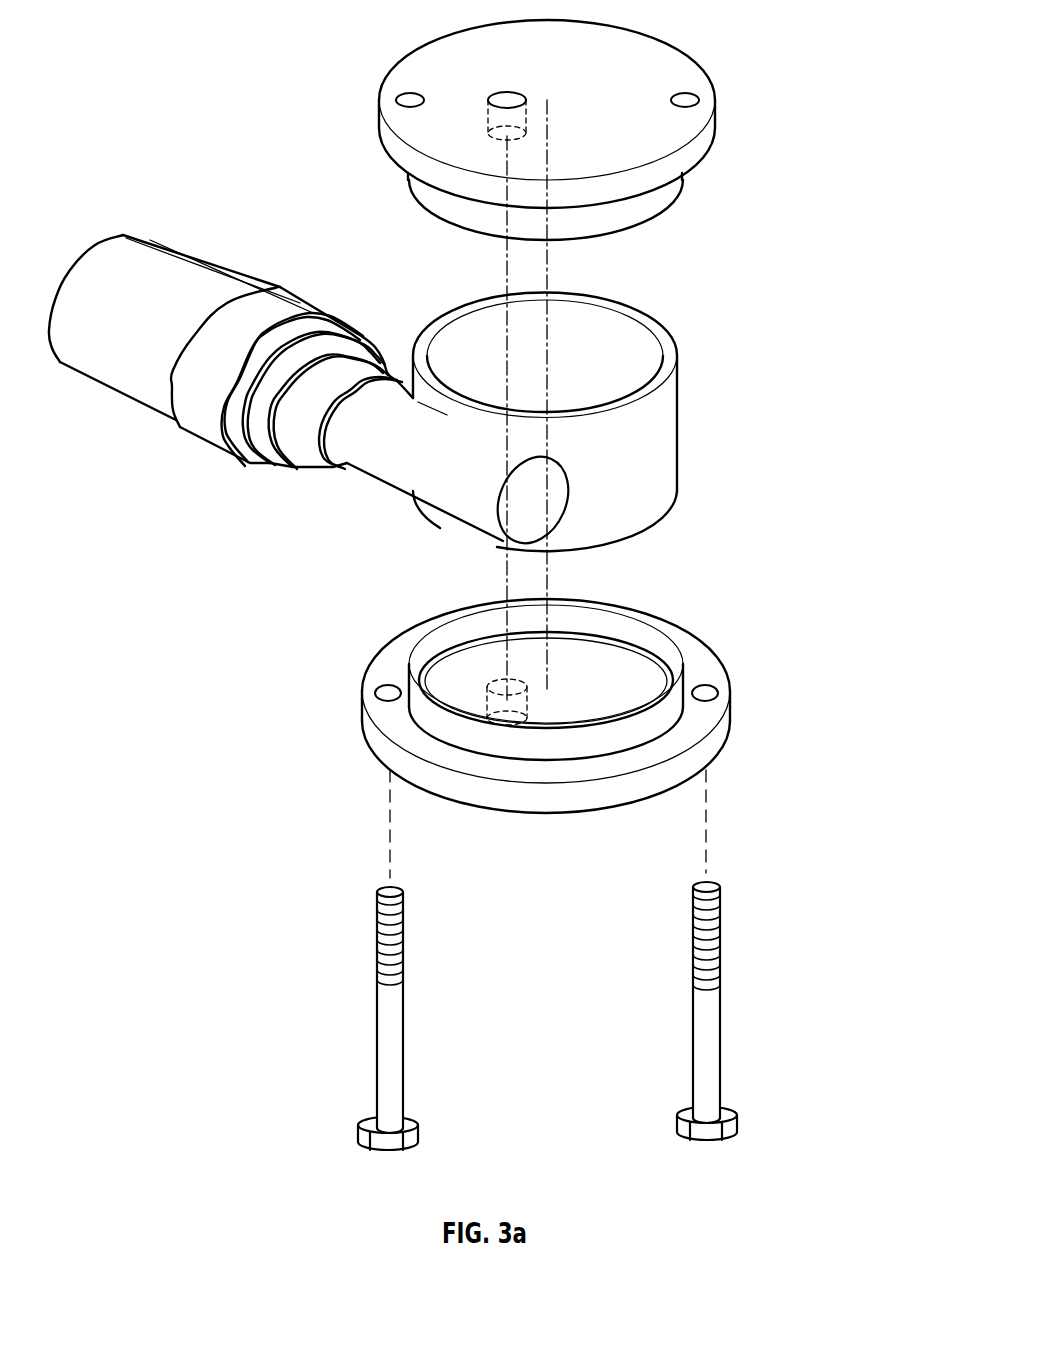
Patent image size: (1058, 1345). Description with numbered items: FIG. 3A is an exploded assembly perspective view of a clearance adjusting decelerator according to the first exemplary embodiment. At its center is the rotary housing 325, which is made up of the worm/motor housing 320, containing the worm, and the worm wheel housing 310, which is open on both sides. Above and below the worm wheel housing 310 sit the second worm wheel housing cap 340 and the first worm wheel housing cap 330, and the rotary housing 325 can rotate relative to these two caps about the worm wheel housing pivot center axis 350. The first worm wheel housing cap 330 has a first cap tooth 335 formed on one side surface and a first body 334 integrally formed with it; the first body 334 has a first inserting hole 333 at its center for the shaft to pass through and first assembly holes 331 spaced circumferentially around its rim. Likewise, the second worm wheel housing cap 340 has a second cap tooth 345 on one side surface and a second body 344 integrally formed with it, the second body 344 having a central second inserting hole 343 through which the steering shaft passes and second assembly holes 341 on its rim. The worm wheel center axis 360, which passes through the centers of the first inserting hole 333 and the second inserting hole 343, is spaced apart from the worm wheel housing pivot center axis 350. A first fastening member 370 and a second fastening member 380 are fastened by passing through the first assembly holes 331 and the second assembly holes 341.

The worm wheel housing 310 is at (440, 512).
The worm/motor housing 320 is at (177, 420).
The rotary housing 325 is at (225, 421).
The first worm wheel housing cap 330 is at (566, 738).
The first assembly hole 331 is at (375, 697).
The first inserting hole 333 is at (500, 722).
The first body 334 is at (713, 712).
The first cap tooth 335 is at (673, 702).
The second worm wheel housing cap 340 is at (638, 123).
The second assembly hole 341 is at (690, 98).
The second inserting hole 343 is at (503, 93).
The second body 344 is at (707, 156).
The second cap tooth 345 is at (585, 215).
The worm wheel housing pivot center axis 350 is at (550, 257).
The worm wheel center axis 360 is at (503, 255).
The first fastening member 370 is at (720, 987).
The second fastening member 380 is at (380, 977).